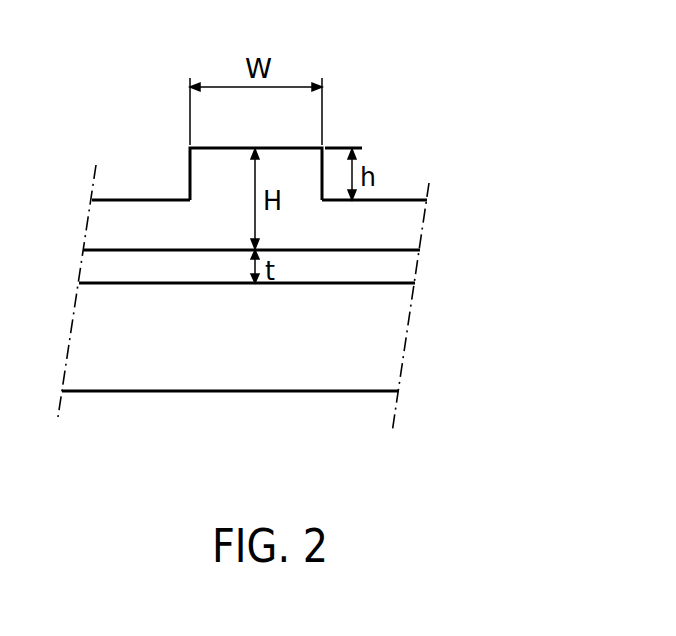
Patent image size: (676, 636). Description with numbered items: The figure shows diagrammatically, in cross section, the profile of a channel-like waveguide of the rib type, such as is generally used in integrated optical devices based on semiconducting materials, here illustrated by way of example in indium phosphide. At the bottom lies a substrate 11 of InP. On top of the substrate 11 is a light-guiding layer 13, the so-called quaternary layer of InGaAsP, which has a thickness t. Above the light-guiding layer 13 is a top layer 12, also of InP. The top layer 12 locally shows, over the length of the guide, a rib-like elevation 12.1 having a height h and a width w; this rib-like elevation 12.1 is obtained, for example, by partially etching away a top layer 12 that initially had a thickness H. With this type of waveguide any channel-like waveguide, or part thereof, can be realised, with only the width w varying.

The substrate 11 is at (388, 342).
The top layer 12 is at (398, 233).
The rib-like elevation 12.1 is at (212, 177).
The light-guiding layer 13 is at (392, 272).